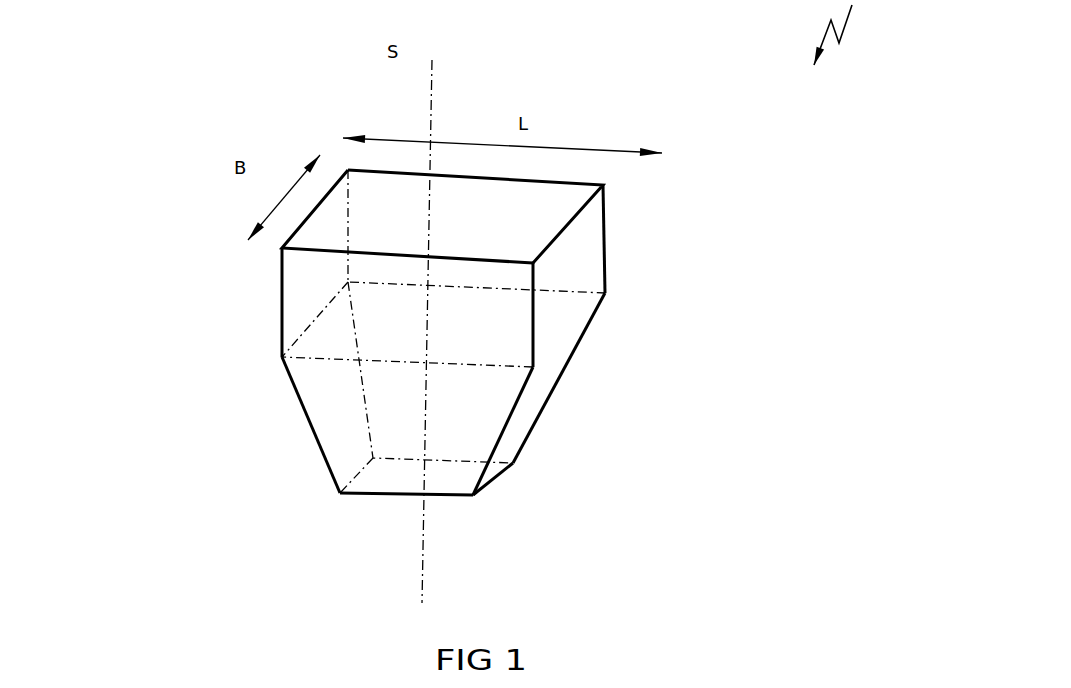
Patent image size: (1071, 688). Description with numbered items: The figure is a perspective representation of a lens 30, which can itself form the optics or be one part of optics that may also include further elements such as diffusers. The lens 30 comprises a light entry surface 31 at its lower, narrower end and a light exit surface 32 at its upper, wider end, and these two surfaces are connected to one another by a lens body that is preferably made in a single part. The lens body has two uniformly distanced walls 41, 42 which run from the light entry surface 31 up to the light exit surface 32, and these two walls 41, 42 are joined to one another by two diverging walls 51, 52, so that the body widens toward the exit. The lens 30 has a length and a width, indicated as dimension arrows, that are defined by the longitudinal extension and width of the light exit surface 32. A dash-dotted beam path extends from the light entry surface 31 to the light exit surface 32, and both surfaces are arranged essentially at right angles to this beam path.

The lens 30 is at (785, 687).
The light entry surface 31 is at (347, 527).
The light exit surface 32 is at (518, 242).
The wall 41 is at (655, 260).
The wall 42 is at (450, 423).
The diverging wall 51 is at (247, 370).
The diverging wall 52 is at (538, 383).